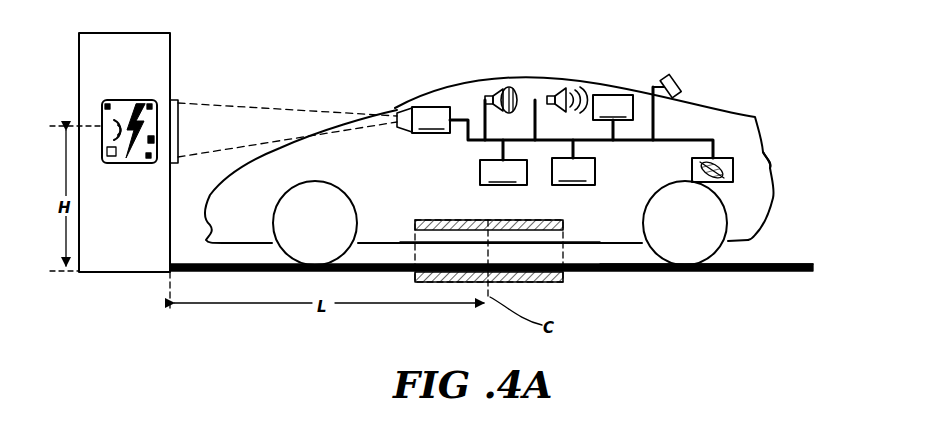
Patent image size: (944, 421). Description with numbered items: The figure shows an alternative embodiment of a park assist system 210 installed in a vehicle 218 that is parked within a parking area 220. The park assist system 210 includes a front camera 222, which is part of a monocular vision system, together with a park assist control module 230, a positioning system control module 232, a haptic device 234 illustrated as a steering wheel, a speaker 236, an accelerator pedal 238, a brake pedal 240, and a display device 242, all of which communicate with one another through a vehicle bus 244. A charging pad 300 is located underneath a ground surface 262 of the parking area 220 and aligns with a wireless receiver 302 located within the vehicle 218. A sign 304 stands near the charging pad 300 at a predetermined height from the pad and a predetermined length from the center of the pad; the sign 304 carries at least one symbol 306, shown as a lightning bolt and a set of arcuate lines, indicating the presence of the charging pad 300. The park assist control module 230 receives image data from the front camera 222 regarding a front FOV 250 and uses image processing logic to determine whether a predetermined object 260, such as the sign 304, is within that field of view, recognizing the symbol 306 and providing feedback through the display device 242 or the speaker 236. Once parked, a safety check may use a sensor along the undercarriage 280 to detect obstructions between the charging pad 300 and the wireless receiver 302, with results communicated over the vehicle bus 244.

The park assist system 210 is at (737, 98).
The vehicle 218 is at (770, 163).
The parking area 220 is at (187, 258).
The front camera 222 is at (423, 120).
The park assist control module 230 is at (503, 172).
The positioning system control module 232 is at (573, 171).
The haptic device 234 is at (505, 87).
The speaker 236 is at (556, 88).
The accelerator pedal 238 is at (613, 107).
The brake pedal 240 is at (676, 78).
The display device 242 is at (734, 170).
The vehicle bus 244 is at (601, 141).
The front FOV 250 is at (232, 105).
The predetermined object 260 is at (124, 163).
The ground surface 262 is at (762, 264).
The undercarriage 280 is at (396, 252).
The charging pad 300 is at (547, 283).
The wireless receiver 302 is at (565, 228).
The sign 304 is at (143, 114).
The symbol 306 is at (111, 125).